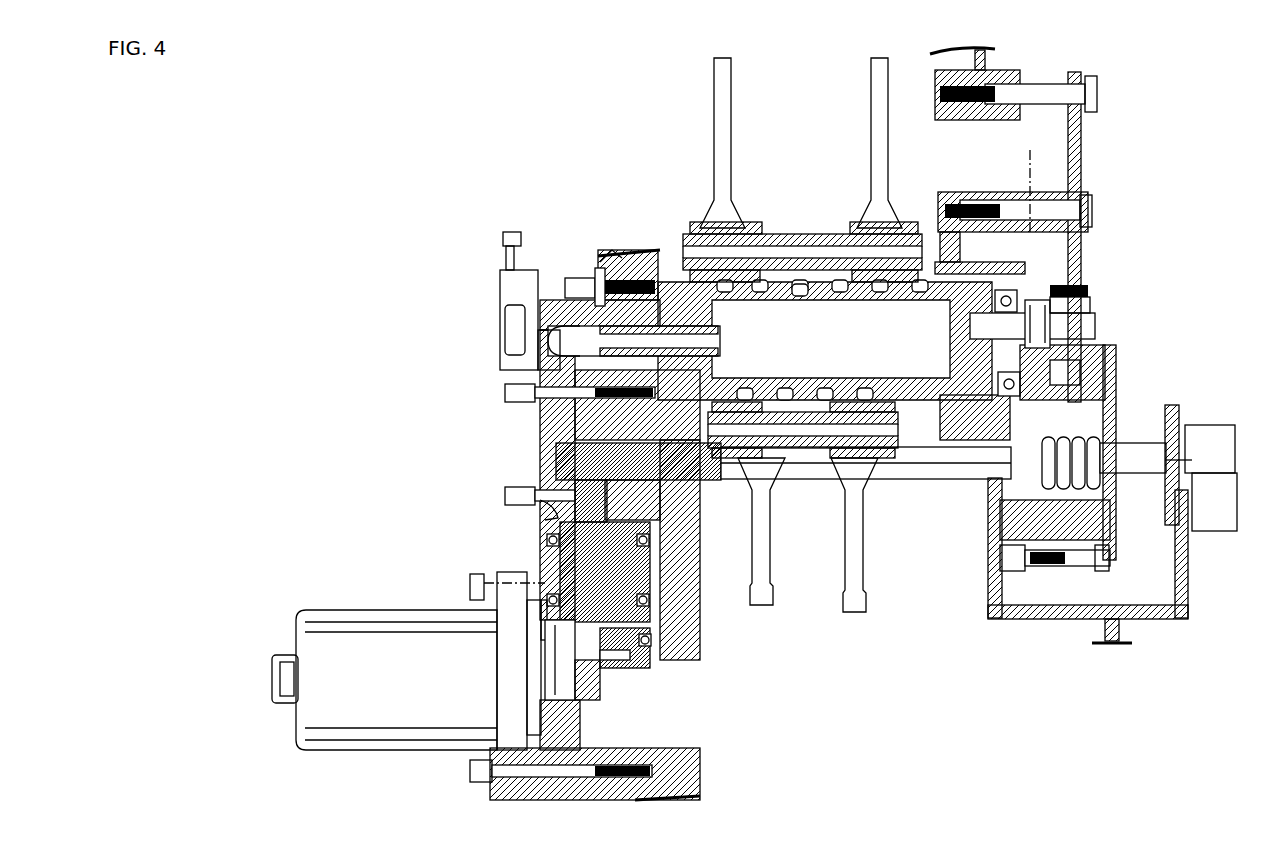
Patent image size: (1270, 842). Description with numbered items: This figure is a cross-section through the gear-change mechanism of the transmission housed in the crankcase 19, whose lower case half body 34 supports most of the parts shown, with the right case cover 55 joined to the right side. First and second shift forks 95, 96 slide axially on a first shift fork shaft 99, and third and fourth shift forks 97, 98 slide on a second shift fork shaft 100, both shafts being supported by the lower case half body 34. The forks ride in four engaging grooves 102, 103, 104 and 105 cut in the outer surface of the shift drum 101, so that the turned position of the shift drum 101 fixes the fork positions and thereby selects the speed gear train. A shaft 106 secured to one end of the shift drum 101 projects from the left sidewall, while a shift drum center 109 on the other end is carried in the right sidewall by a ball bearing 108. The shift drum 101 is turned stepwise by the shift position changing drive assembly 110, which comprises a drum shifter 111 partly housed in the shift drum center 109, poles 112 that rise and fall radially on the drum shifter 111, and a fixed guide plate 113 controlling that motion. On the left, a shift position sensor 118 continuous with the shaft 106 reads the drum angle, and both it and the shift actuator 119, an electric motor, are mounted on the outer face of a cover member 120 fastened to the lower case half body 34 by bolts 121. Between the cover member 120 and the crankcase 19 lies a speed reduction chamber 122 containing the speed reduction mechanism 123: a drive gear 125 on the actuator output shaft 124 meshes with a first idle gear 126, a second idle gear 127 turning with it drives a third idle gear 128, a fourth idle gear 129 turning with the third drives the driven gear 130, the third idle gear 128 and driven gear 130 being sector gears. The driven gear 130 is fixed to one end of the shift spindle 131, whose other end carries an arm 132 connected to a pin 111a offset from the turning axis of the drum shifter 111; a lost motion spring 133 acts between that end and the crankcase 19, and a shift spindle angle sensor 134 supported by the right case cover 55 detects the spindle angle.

The crankcase 19 is at (604, 262).
The lower case half body 34 is at (633, 250).
The right case cover 55 is at (1186, 585).
The first shift fork 95 is at (762, 590).
The second shift fork 96 is at (856, 572).
The third shift fork 97 is at (724, 150).
The fourth shift fork 98 is at (878, 150).
The first shift fork shaft 99 is at (800, 450).
The second shift fork shaft 100 is at (804, 234).
The shift drum 101 is at (800, 288).
The engaging groove 102 is at (750, 460).
The engaging groove 103 is at (836, 420).
The engaging groove 104 is at (700, 226).
The engaging groove 105 is at (893, 224).
The shaft 106 is at (708, 345).
The ball bearing 108 is at (1030, 268).
The shift drum center 109 is at (972, 363).
The shift position changing drive assembly 110 is at (1100, 308).
The drum shifter 111 is at (1098, 320).
The pin 111a is at (1112, 368).
The poles 112 is at (1090, 292).
The fixed guide plate 113 is at (1082, 240).
The shift position sensor 118 is at (505, 350).
The shift actuator 119 is at (404, 687).
The cover member 120 is at (545, 428).
The bolts 121 is at (505, 392).
The speed reduction chamber 122 is at (545, 512).
The speed reduction mechanism 123 is at (612, 668).
The output shaft 124 is at (560, 677).
The drive gear 125 is at (590, 692).
The first idle gear 126 is at (545, 610).
The second idle gear 127 is at (617, 652).
The third idle gear 128 is at (651, 640).
The fourth idle gear 129 is at (540, 603).
The driven gear 130 is at (613, 555).
The shift spindle 131 is at (556, 462).
The arm 132 is at (1115, 413).
The lost motion spring 133 is at (1102, 458).
The shift spindle angle sensor 134 is at (1228, 443).